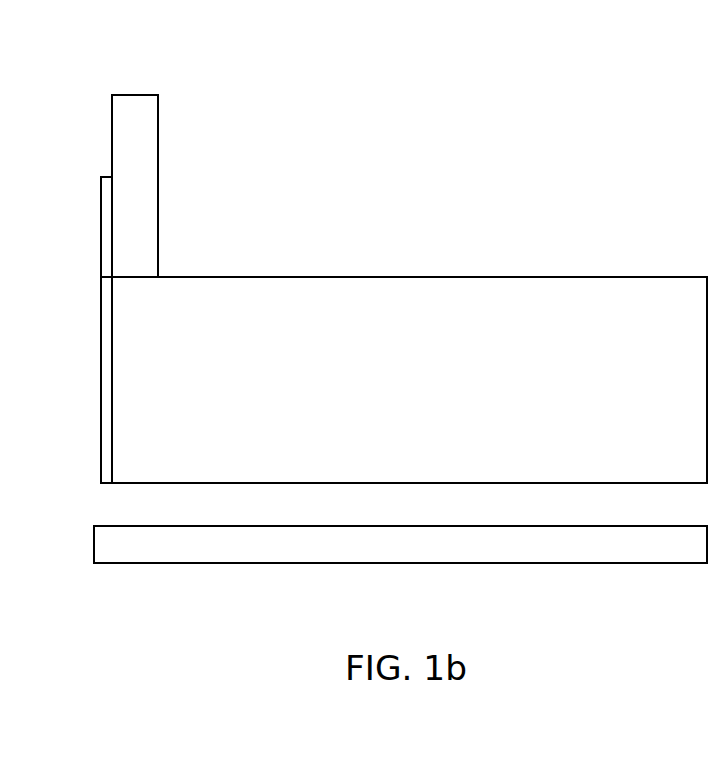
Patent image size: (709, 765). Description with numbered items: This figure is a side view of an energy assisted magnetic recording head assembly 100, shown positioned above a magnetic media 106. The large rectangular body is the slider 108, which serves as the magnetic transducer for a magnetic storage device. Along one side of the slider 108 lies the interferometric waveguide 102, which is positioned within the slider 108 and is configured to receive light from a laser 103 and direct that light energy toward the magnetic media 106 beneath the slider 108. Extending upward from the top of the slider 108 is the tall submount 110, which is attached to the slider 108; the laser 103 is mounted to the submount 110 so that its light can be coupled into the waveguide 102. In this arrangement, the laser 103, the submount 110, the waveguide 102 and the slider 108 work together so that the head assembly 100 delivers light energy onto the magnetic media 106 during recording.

The energy assisted magnetic recording (EAMR) head assembly 100 is at (519, 92).
The interferometric waveguide 102 is at (100, 382).
The laser 103 is at (103, 177).
The magnetic media 106 is at (458, 558).
The slider 108 is at (403, 277).
The submount 110 is at (158, 185).